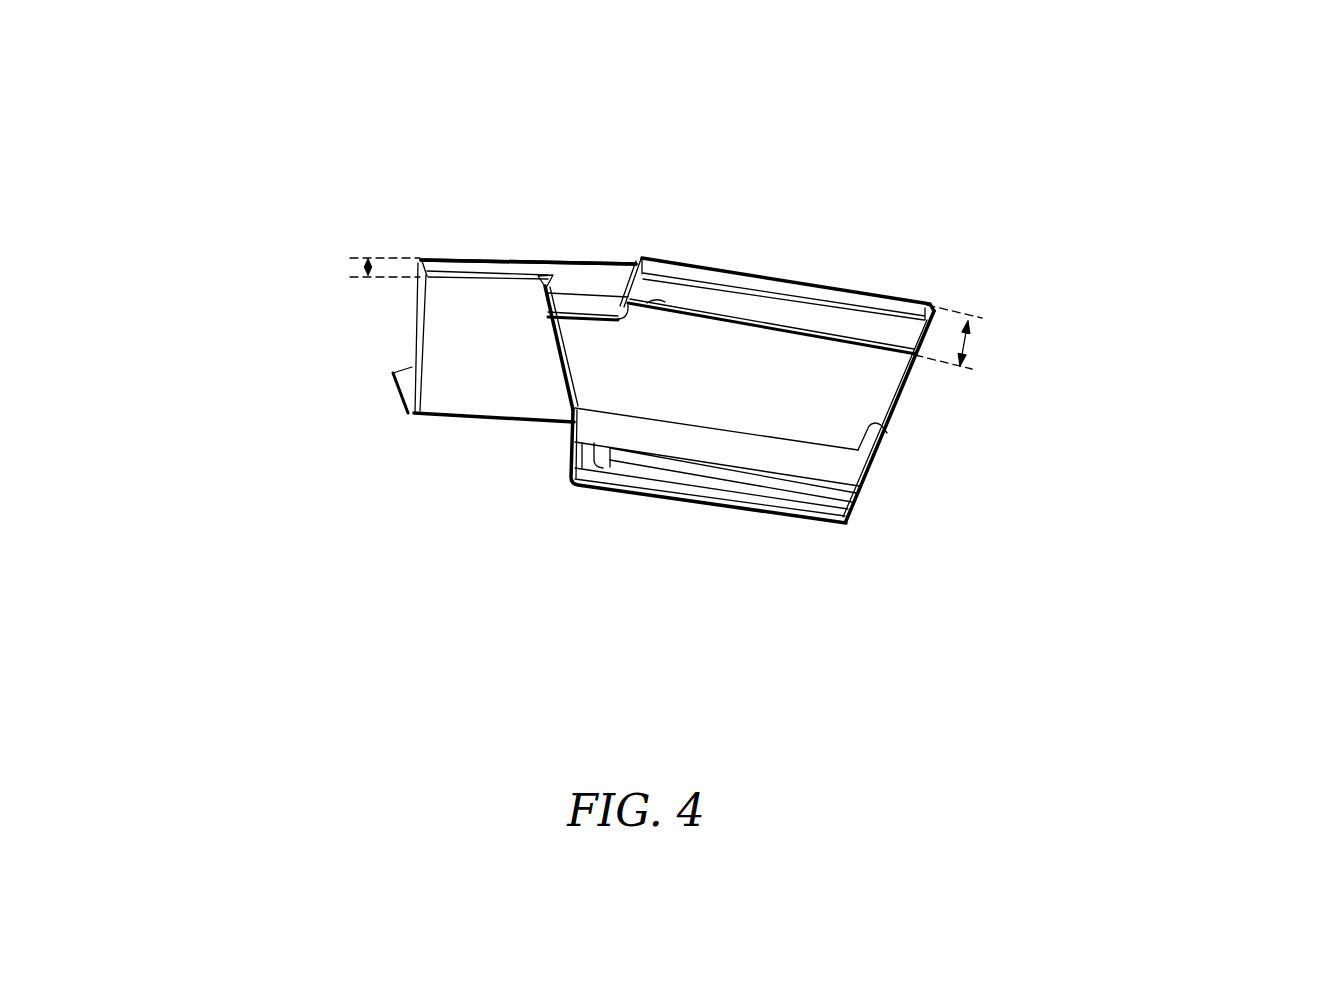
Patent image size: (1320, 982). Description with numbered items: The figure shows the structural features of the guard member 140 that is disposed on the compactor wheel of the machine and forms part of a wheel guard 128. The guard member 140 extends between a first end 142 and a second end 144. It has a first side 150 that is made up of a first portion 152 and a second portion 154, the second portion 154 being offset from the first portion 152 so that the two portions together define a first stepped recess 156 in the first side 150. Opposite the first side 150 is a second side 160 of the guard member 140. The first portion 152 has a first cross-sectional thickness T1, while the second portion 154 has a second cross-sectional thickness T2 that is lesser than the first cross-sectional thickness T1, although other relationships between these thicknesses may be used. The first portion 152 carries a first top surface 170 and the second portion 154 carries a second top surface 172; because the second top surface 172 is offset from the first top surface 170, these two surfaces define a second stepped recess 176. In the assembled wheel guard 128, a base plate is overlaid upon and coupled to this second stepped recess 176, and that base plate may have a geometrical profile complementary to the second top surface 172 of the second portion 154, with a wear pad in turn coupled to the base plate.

The wheel guard 128 is at (511, 138).
The guard member 140 is at (425, 243).
The second top surface 172 is at (485, 257).
The second side 160 is at (614, 247).
The second stepped recess 176 is at (638, 247).
The first top surface 170 is at (749, 305).
The first end 142 is at (1085, 306).
The second end 144 is at (322, 301).
The first side 150 is at (907, 464).
The first portion 152 is at (856, 380).
The second portion 154 is at (455, 372).
The first stepped recess 156 is at (566, 443).
The first cross-sectional thickness T1 is at (964, 343).
The second cross-sectional thickness T2 is at (367, 266).